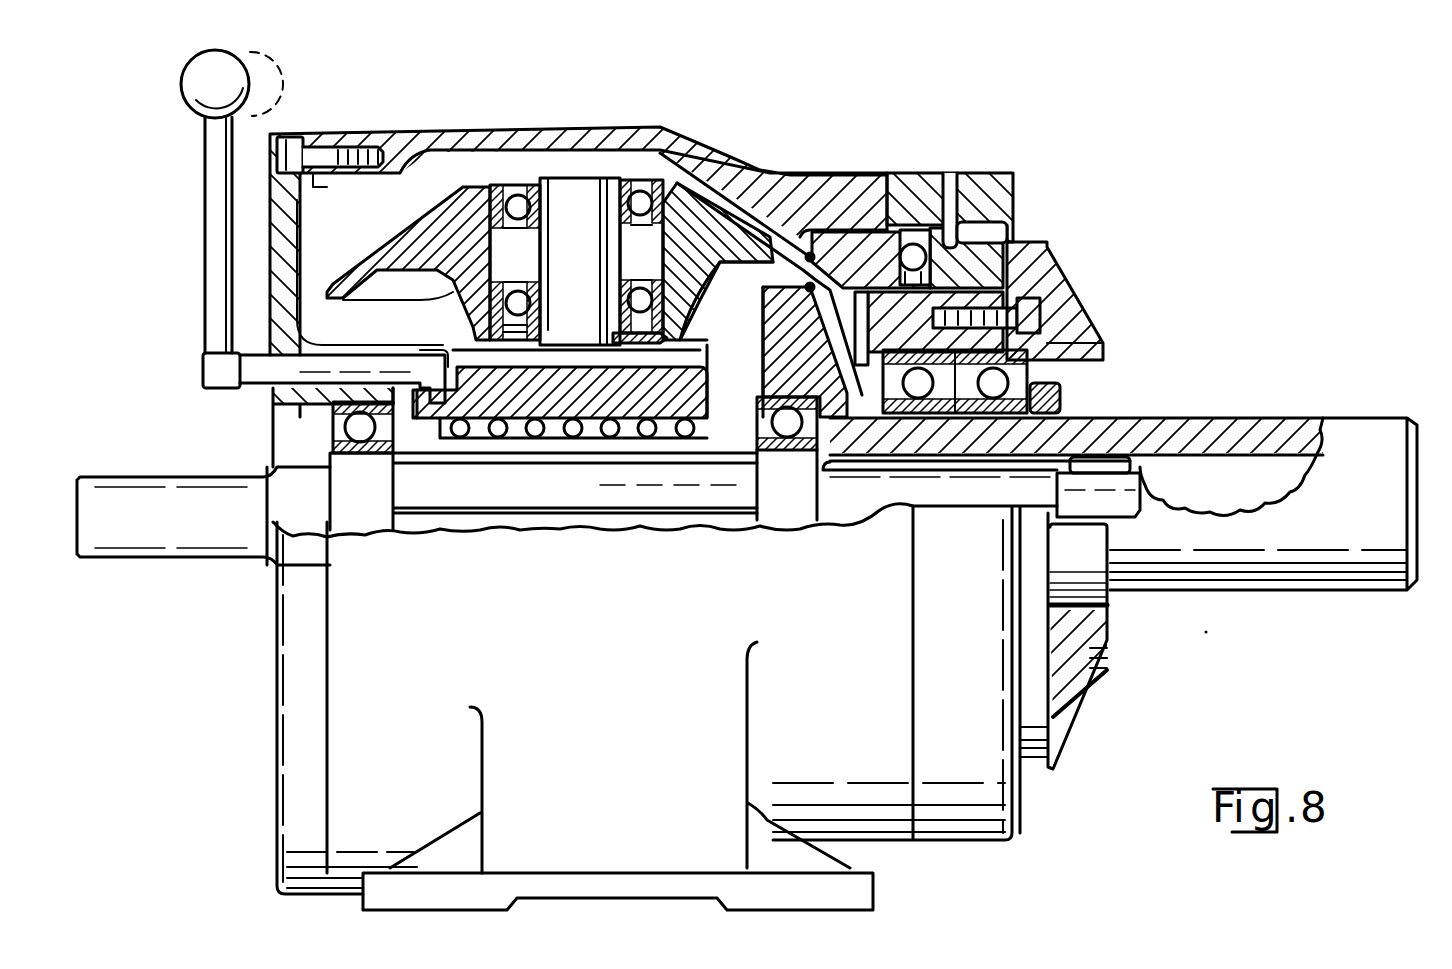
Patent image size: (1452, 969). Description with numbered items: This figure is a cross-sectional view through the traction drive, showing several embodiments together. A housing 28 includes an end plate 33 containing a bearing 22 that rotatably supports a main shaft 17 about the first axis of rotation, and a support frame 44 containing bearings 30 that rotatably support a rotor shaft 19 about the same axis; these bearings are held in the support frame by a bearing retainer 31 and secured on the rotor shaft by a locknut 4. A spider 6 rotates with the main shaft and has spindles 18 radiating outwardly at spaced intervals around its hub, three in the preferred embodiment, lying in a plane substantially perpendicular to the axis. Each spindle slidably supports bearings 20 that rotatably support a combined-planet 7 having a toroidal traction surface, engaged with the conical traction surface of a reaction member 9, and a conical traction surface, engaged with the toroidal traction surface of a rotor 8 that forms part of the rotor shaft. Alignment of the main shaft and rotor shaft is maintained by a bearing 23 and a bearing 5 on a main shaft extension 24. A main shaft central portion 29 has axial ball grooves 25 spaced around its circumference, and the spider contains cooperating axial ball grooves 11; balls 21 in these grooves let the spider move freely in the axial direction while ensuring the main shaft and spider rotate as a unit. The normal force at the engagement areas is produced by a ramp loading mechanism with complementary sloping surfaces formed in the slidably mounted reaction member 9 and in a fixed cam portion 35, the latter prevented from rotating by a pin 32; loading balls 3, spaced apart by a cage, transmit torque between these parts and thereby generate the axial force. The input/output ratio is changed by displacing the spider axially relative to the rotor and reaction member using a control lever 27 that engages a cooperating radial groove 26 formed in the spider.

The loading balls 3 is at (910, 245).
The locknut 4 is at (1060, 407).
The bearing 5 is at (1133, 467).
The spider 6 is at (697, 357).
The combined-planet 7 is at (400, 237).
The rotor 8 is at (765, 333).
The reaction member 9 is at (833, 240).
The axial ball grooves 11 is at (443, 440).
The main shaft 17 is at (148, 483).
The spindles 18 is at (578, 170).
The rotor shaft 19 is at (1218, 418).
The bearings 20 is at (700, 200).
The balls 21 is at (543, 440).
The bearing 22 is at (333, 420).
The bearing 23 is at (805, 452).
The main shaft extension 24 is at (890, 500).
The axial ball grooves 25 is at (723, 440).
The radial groove 26 is at (463, 400).
The control lever 27 is at (208, 262).
The housing 28 is at (437, 137).
The main shaft central portion 29 is at (480, 497).
The bearings 30 is at (1027, 368).
The bearing retainer 31 is at (1063, 288).
The pin 32 is at (950, 175).
The end plate 33 is at (310, 132).
The fixed cam portion 35 is at (967, 233).
The support frame 44 is at (1000, 185).